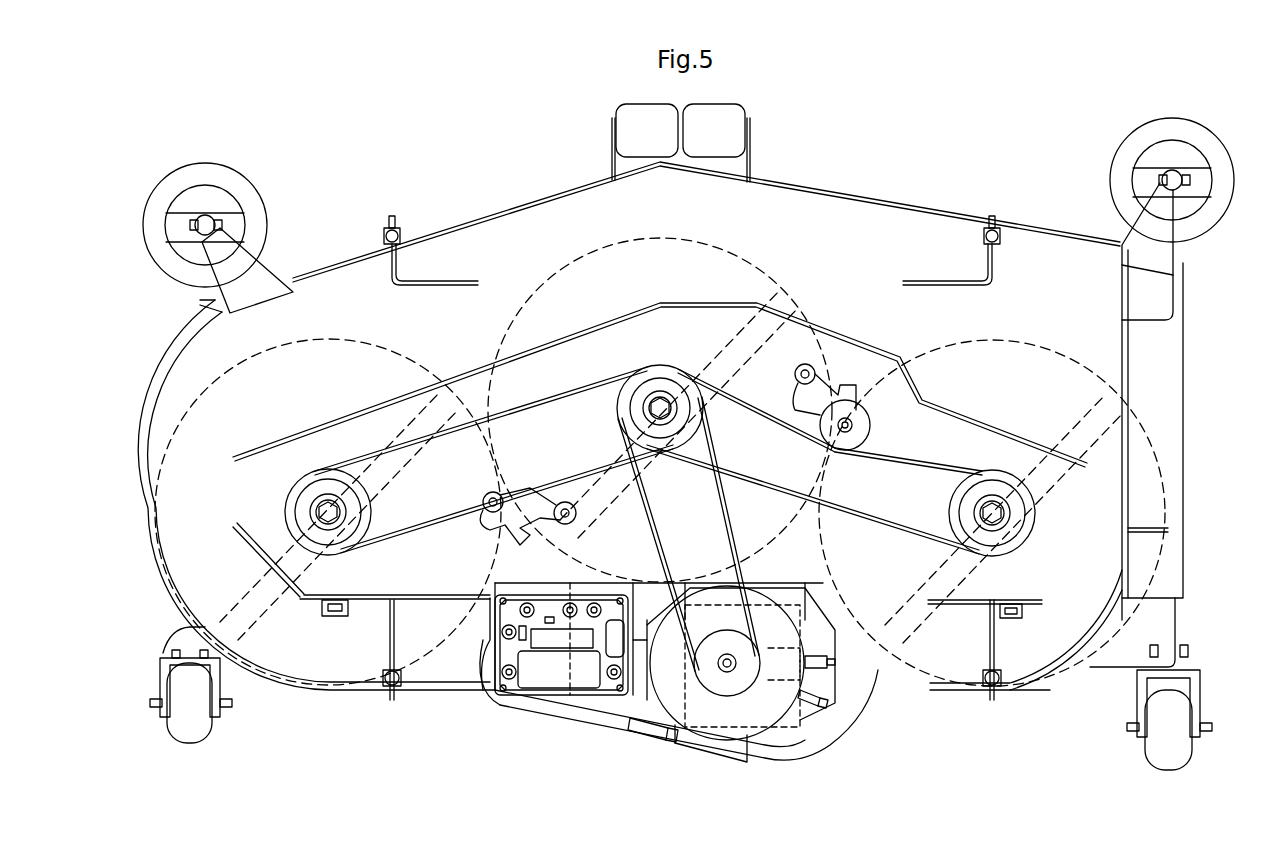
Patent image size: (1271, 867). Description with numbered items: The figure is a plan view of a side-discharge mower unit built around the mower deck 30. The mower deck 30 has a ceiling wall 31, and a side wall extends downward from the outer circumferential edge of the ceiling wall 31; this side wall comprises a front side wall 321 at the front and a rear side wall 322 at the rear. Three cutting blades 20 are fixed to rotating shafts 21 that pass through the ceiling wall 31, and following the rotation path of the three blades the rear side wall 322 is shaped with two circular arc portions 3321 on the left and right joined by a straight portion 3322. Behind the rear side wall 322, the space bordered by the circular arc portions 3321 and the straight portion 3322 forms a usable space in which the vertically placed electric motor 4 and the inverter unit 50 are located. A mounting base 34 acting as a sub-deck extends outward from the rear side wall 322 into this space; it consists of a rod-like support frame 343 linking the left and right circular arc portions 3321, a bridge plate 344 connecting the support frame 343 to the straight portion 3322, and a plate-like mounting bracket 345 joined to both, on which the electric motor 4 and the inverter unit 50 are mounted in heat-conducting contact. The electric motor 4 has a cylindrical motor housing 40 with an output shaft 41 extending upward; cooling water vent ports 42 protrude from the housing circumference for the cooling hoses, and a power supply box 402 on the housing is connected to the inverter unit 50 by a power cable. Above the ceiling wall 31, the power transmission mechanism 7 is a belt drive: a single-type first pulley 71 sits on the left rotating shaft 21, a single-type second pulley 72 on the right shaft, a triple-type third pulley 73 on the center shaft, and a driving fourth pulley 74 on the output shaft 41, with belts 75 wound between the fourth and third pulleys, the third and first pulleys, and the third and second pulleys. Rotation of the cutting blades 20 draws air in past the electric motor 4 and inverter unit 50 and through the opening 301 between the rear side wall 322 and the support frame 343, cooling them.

The mower deck 30 is at (935, 192).
The ceiling wall 31 is at (540, 240).
The front side wall 321 is at (838, 192).
The rear side wall 322 is at (1025, 692).
The cutting blade 20 is at (232, 588).
The rotating shaft 21 is at (322, 512).
The power transmission mechanism 7 is at (600, 376).
The first pulley 71 is at (345, 550).
The second pulley 72 is at (1010, 548).
The third pulley 73 is at (660, 395).
The fourth pulley 74 is at (742, 676).
The belt 75 is at (432, 522).
The circular arc portion 3321 is at (395, 700).
The straight portion 3322 is at (565, 602).
The bridge plate 344 is at (650, 612).
The mounting base 34 is at (507, 715).
The support frame 343 is at (572, 718).
The mounting bracket 345 is at (640, 738).
The opening 301 is at (487, 642).
The inverter unit 50 is at (535, 680).
The electric motor 4 is at (775, 733).
The motor housing 40 is at (760, 735).
The output shaft 41 is at (726, 675).
The cooling water vent port 42 is at (822, 688).
The power supply box 402 is at (680, 752).